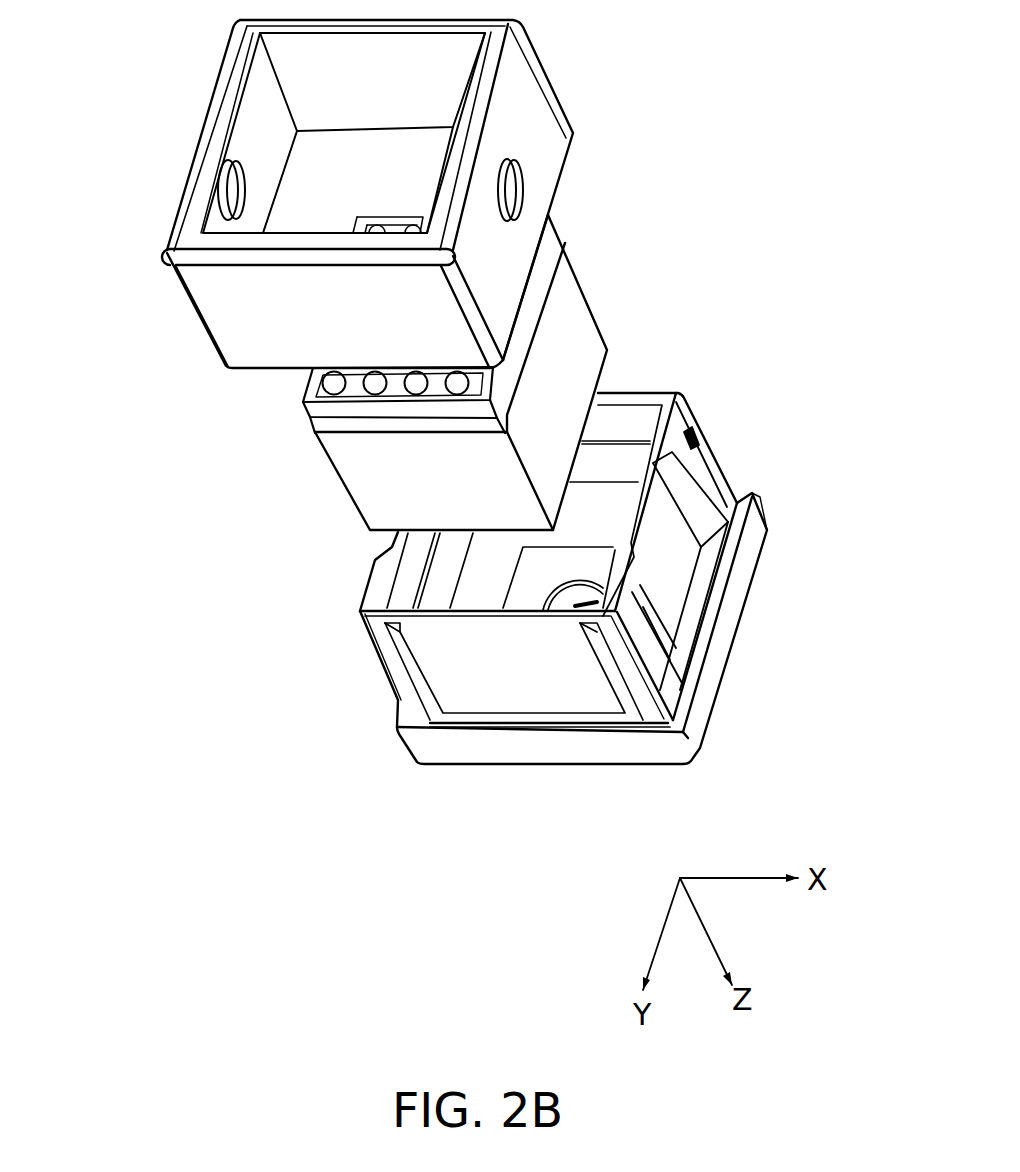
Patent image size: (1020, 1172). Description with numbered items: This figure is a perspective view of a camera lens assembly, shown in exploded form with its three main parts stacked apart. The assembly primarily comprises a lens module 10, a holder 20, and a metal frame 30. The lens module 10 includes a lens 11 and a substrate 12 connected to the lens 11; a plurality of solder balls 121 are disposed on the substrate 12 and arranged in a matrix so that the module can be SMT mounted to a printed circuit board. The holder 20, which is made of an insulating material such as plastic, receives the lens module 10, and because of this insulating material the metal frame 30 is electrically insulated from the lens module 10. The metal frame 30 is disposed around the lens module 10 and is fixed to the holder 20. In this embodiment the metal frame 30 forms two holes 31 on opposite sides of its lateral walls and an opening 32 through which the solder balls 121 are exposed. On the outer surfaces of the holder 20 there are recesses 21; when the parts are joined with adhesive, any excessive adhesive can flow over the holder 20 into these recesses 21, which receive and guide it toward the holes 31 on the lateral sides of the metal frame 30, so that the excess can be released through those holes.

The lens module 10 is at (469, 372).
The lens 11 is at (590, 305).
The substrate 12 is at (441, 327).
The solder balls 121 is at (375, 383).
The holder 20 is at (546, 578).
The recesses 21 is at (672, 557).
The metal frame 30 is at (357, 194).
The holes 31 is at (233, 202).
The opening 32 is at (313, 173).